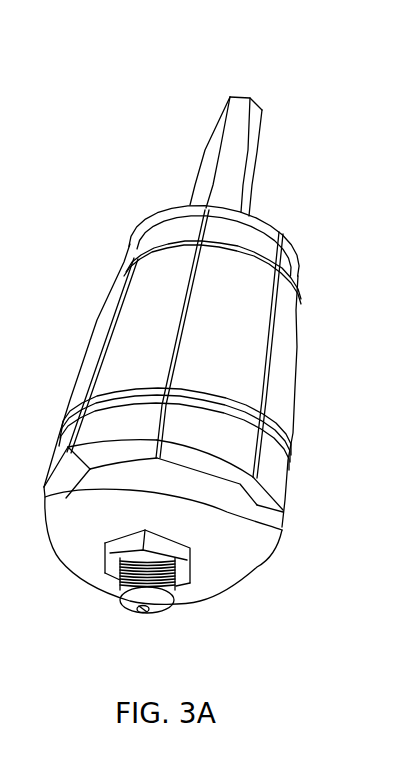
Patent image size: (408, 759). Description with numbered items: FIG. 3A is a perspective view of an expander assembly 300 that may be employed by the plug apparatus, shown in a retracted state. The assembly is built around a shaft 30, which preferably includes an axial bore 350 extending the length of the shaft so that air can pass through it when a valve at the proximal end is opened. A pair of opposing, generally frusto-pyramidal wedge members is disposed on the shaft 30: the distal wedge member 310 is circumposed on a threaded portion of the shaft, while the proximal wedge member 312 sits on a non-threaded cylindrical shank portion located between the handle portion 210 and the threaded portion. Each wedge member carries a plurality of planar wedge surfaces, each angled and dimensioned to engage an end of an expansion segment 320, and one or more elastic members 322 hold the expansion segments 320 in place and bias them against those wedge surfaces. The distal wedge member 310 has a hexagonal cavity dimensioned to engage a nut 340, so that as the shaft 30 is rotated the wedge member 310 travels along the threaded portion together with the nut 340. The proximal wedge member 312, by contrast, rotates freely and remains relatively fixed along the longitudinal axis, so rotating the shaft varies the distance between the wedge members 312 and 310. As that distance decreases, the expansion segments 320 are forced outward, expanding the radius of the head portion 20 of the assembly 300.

The expander assembly 300 is at (100, 95).
The shaft 30 is at (255, 188).
The handle portion 210 is at (212, 136).
The head portion 20 is at (298, 347).
The proximal wedge member 312 is at (185, 210).
The expansion segment 320 is at (147, 287).
The elastic member 322 is at (279, 447).
The distal wedge member 310 is at (250, 547).
The nut 340 is at (197, 563).
The axial bore 350 is at (143, 613).